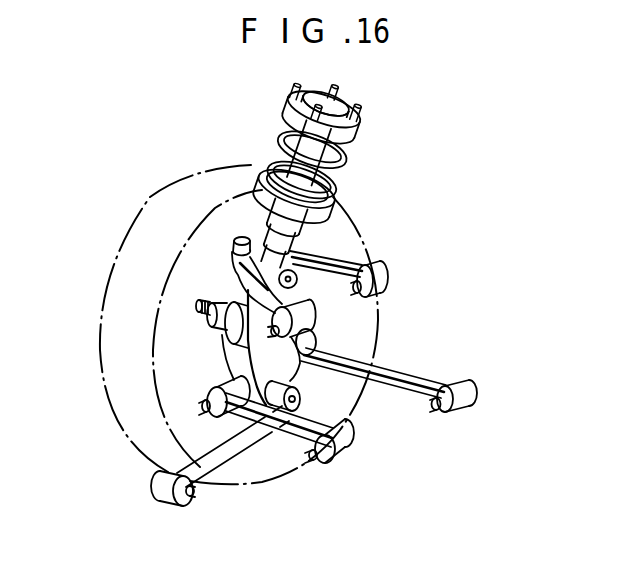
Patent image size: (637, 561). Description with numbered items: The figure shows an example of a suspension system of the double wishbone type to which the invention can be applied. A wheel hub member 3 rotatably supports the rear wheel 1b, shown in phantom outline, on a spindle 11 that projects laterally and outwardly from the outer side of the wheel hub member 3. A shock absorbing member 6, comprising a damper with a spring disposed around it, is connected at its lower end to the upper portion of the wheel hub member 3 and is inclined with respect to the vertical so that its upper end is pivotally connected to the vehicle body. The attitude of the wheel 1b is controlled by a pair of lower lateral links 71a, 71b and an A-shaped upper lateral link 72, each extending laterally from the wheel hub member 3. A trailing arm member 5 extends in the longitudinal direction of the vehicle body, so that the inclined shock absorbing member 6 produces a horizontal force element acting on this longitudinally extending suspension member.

The rear wheel 1b is at (112, 370).
The wheel hub member 3 is at (300, 371).
The trailing arm member 5 is at (217, 460).
The shock absorbing member 6 is at (341, 181).
The spindle 11 is at (218, 332).
The lower lateral link 71a is at (412, 366).
The lower lateral link 71b is at (287, 447).
The upper lateral link 72 is at (337, 257).